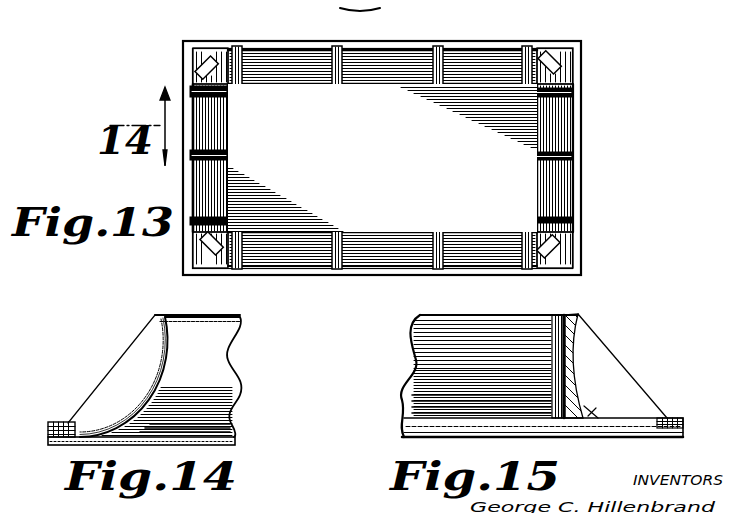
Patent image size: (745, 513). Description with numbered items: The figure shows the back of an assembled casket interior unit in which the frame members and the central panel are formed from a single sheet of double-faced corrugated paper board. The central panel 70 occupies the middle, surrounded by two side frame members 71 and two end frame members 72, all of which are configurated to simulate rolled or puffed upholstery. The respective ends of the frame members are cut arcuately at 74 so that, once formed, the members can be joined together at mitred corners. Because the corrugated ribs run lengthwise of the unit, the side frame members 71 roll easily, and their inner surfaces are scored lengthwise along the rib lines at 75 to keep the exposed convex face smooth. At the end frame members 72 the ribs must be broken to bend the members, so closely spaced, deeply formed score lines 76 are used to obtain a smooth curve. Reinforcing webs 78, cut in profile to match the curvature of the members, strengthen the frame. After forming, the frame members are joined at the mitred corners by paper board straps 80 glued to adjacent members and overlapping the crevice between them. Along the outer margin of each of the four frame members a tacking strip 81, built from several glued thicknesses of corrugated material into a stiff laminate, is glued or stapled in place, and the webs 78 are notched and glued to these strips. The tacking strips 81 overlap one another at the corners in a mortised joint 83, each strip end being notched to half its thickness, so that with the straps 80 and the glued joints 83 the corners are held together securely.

In FIG. 13, the central panel portion 70 is at (382, 158).
In FIG. 14, the central panel portion 70 is at (188, 316).
In FIG. 15, the central panel portion 70 is at (452, 316).
In FIG. 14, the side frame member portions 71 is at (222, 374).
In FIG. 14, the end frame member portions 72 is at (150, 392).
In FIG. 13, the arcuately cut ends 74 is at (567, 61).
In FIG. 15, the arcuately cut ends 74 is at (577, 395).
In FIG. 13, the score lines 75 is at (403, 60).
In FIG. 13, the score lines 76 is at (205, 194).
In FIG. 15, the score lines 76 is at (427, 345).
In FIG. 13, the reinforcing webs 78 is at (348, 53).
In FIG. 14, the reinforcing webs 78 is at (127, 370).
In FIG. 15, the reinforcing webs 78 is at (545, 328).
In FIG. 13, the straps 80 is at (201, 66).
In FIG. 15, the straps 80 is at (593, 412).
In FIG. 13, the tacking strips 81 is at (486, 45).
In FIG. 14, the tacking strips 81 is at (63, 422).
In FIG. 15, the tacking strips 81 is at (578, 428).
In FIG. 15, the mortised joint 83 is at (672, 418).